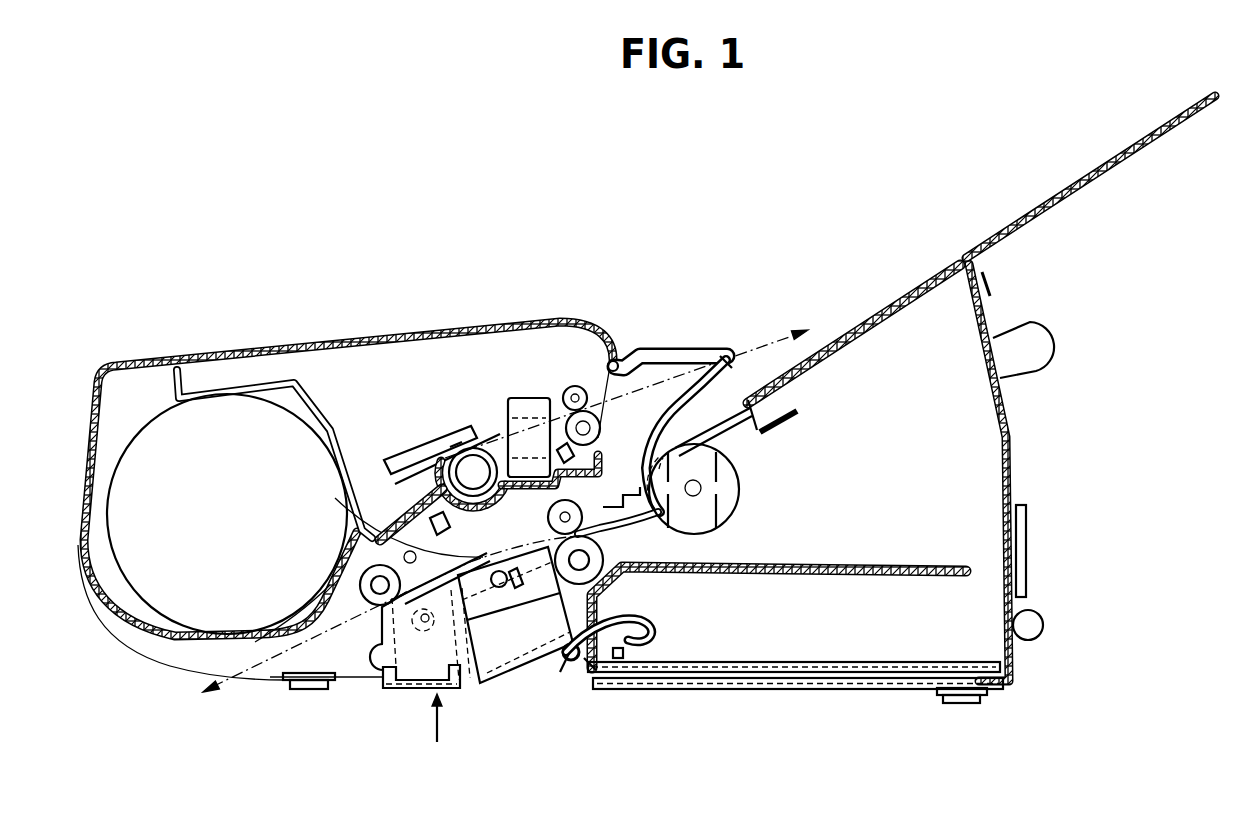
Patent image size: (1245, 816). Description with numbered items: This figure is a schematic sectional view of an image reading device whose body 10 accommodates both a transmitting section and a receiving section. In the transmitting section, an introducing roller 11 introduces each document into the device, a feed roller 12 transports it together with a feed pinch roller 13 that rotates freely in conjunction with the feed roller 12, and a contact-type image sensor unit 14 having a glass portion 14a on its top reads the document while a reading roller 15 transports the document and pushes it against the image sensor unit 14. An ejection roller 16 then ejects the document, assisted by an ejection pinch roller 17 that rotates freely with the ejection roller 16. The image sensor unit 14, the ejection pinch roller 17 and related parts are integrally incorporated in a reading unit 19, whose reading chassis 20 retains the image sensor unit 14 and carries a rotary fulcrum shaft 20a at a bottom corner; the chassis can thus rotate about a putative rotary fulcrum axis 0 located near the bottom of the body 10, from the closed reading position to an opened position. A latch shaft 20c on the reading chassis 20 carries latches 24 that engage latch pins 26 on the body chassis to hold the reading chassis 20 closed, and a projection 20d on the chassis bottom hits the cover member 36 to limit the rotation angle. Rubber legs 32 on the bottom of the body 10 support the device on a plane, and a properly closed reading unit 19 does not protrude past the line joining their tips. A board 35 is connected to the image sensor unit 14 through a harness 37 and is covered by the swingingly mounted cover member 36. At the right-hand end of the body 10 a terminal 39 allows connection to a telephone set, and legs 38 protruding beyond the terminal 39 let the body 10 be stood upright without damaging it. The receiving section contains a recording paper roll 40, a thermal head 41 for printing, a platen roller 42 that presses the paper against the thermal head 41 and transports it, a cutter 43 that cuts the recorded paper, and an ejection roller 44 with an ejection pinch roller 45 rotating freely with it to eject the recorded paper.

The rotary fulcrum axis 0 is at (598, 662).
The body 10 is at (1010, 447).
The introducing roller 11 is at (740, 490).
The feed roller 12 is at (606, 553).
The feed pinch roller 13 is at (582, 503).
The contact-type image sensor unit 14 is at (500, 652).
The glass portion 14a is at (404, 458).
The reading roller 15 is at (470, 463).
The ejection roller 16 is at (366, 574).
The ejection pinch roller 17 is at (360, 600).
The reading unit 19 is at (437, 743).
The reading chassis 20 is at (522, 660).
The rotary fulcrum shaft 20a is at (582, 668).
The latch shaft 20c is at (405, 692).
The projection 20d is at (560, 672).
The latch 24 is at (383, 663).
The latch pin 26 is at (457, 662).
The rubber legs 32 is at (270, 690).
The board 35 is at (782, 673).
The cover member 36 is at (830, 689).
The harness 37 is at (655, 637).
The legs 38 is at (1035, 325).
The terminal 39 is at (1024, 545).
The recording paper roll 40 is at (163, 430).
The thermal head 41 is at (418, 457).
The platen roller 42 is at (458, 443).
The cutter 43 is at (531, 405).
The ejection roller 44 is at (618, 357).
The ejection pinch roller 45 is at (573, 387).